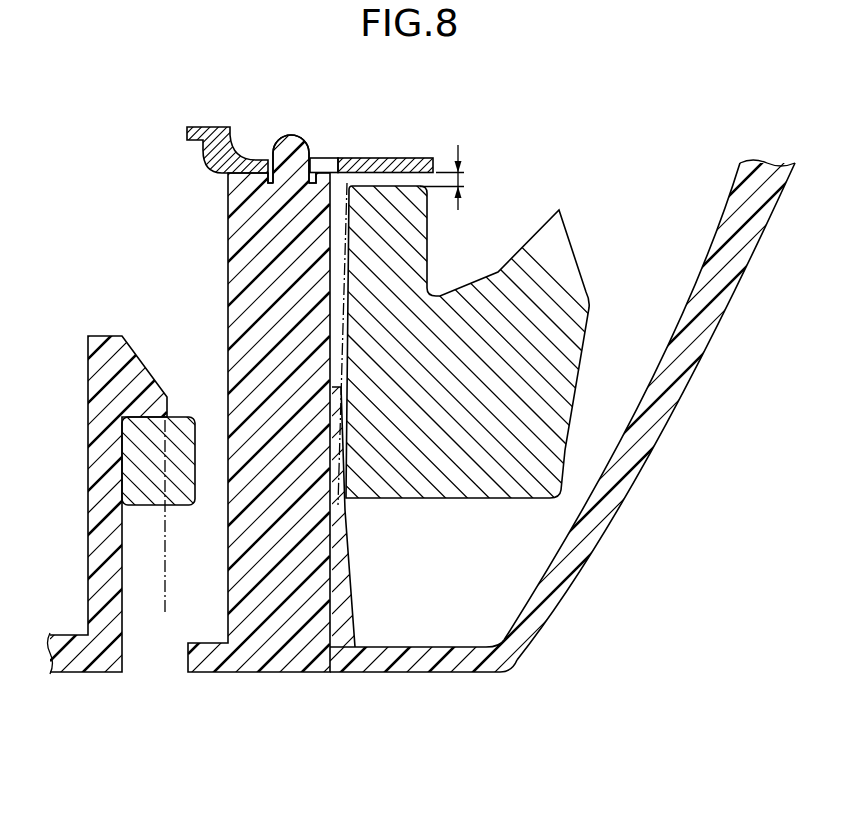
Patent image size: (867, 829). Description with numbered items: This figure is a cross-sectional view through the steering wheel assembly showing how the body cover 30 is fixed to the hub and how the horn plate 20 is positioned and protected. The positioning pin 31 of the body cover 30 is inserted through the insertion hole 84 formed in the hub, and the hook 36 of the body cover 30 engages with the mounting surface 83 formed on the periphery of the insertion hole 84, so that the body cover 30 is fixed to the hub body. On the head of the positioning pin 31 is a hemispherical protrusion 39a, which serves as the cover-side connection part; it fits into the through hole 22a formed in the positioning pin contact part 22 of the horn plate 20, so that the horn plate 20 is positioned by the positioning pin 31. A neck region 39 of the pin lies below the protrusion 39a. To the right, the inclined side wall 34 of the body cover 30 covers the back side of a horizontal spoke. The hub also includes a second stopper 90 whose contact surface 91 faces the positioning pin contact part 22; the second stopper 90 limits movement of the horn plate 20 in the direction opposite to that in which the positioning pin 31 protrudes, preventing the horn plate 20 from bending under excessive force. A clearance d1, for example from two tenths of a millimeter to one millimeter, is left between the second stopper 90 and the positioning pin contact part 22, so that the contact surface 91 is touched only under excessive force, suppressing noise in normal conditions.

The horn plate 20 is at (200, 162).
The positioning pin contact part 22 is at (398, 158).
The through hole 22a is at (332, 158).
The body cover 30 is at (97, 690).
The positioning pin 31 is at (204, 258).
The side wall 34 is at (678, 385).
The hook 36 is at (149, 372).
The neck portion 39 is at (292, 186).
The hemispherical protrusion 39a is at (292, 136).
The mounting surface 83 is at (186, 417).
The insertion hole 84 is at (210, 506).
The second stopper 90 is at (413, 234).
The contact surface 91 is at (377, 185).
The clearance d1 is at (457, 177).